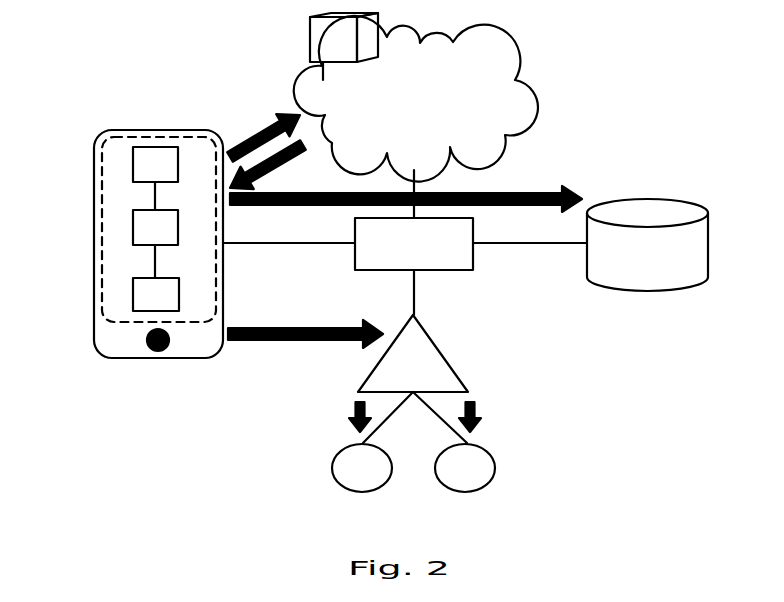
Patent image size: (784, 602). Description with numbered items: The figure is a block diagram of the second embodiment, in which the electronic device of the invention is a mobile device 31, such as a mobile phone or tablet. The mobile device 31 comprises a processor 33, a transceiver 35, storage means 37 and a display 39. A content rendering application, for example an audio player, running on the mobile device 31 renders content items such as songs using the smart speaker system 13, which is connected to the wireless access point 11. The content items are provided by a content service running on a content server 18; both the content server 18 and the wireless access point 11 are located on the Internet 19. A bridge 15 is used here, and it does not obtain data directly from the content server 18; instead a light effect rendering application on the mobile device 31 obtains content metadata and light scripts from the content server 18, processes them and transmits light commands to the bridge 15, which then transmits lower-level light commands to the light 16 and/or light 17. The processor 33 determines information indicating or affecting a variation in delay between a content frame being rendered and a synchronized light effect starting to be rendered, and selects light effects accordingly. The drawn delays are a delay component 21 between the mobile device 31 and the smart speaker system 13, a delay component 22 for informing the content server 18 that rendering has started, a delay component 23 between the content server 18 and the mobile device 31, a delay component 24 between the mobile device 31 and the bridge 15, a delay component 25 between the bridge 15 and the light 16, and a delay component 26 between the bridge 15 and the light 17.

The wireless access point 11 is at (405, 266).
The smart speaker system 13 is at (647, 245).
The bridge 15 is at (413, 379).
The light 16 is at (362, 468).
The light 17 is at (465, 468).
The content server 18 is at (344, 46).
The Internet 19 is at (416, 117).
The delay component 21 is at (545, 192).
The delay component 22 is at (256, 130).
The delay component 23 is at (295, 157).
The delay component 24 is at (248, 342).
The delay component 25 is at (354, 425).
The delay component 26 is at (480, 405).
The mobile device 31 is at (93, 217).
The processor 33 is at (155, 227).
The transceiver 35 is at (155, 164).
The storage means 37 is at (156, 294).
The display 39 is at (102, 272).